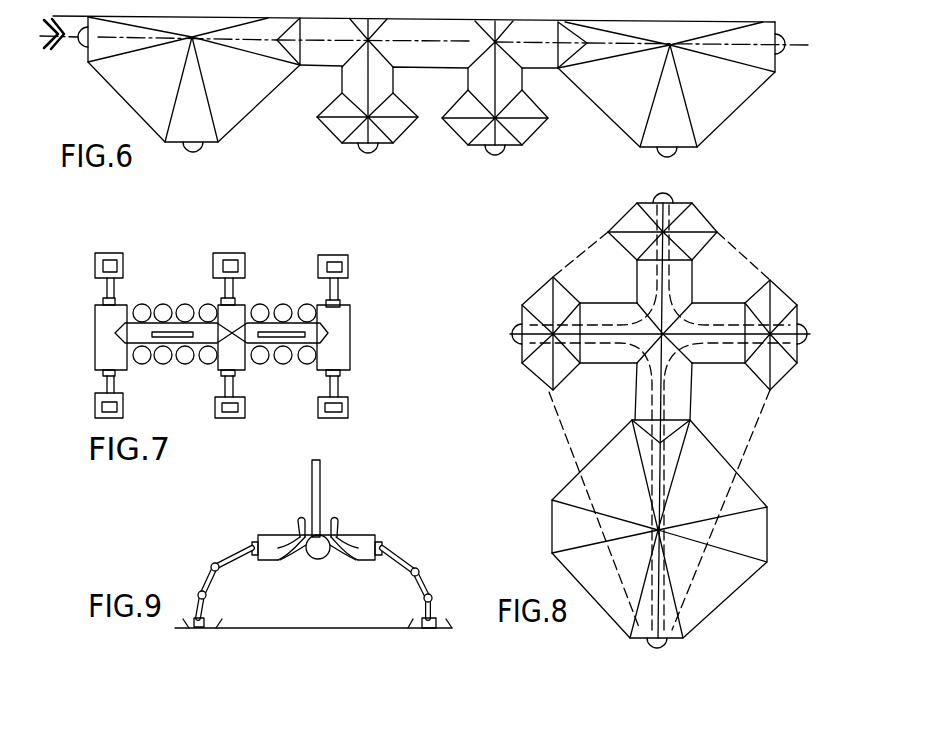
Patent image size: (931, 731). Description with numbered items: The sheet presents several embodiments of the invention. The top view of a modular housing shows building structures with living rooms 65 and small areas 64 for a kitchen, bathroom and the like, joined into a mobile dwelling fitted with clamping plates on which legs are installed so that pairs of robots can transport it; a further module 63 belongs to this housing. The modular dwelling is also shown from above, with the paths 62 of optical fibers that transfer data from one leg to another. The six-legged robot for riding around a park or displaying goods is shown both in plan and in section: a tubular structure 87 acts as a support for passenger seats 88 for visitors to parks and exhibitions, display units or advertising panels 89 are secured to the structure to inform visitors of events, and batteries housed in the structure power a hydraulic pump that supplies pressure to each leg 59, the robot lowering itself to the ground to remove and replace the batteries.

In FIG. 7, the leg 59 is at (340, 285).
In FIG. 9, the leg 59 is at (235, 555).
In FIG. 8, the paths of optical fibers 62 is at (672, 385).
In FIG. 6, the first module 63 is at (355, 152).
In FIG. 6, the small areas 64 is at (525, 127).
In FIG. 6, the living rooms 65 is at (723, 88).
In FIG. 7, the tubular structure 87 is at (327, 352).
In FIG. 9, the tubular structure 87 is at (318, 543).
In FIG. 7, the passenger seats 88 is at (280, 313).
In FIG. 9, the passenger seats 88 is at (275, 562).
In FIG. 7, the display units or advertising panels 89 is at (173, 332).
In FIG. 9, the display units or advertising panels 89 is at (320, 472).